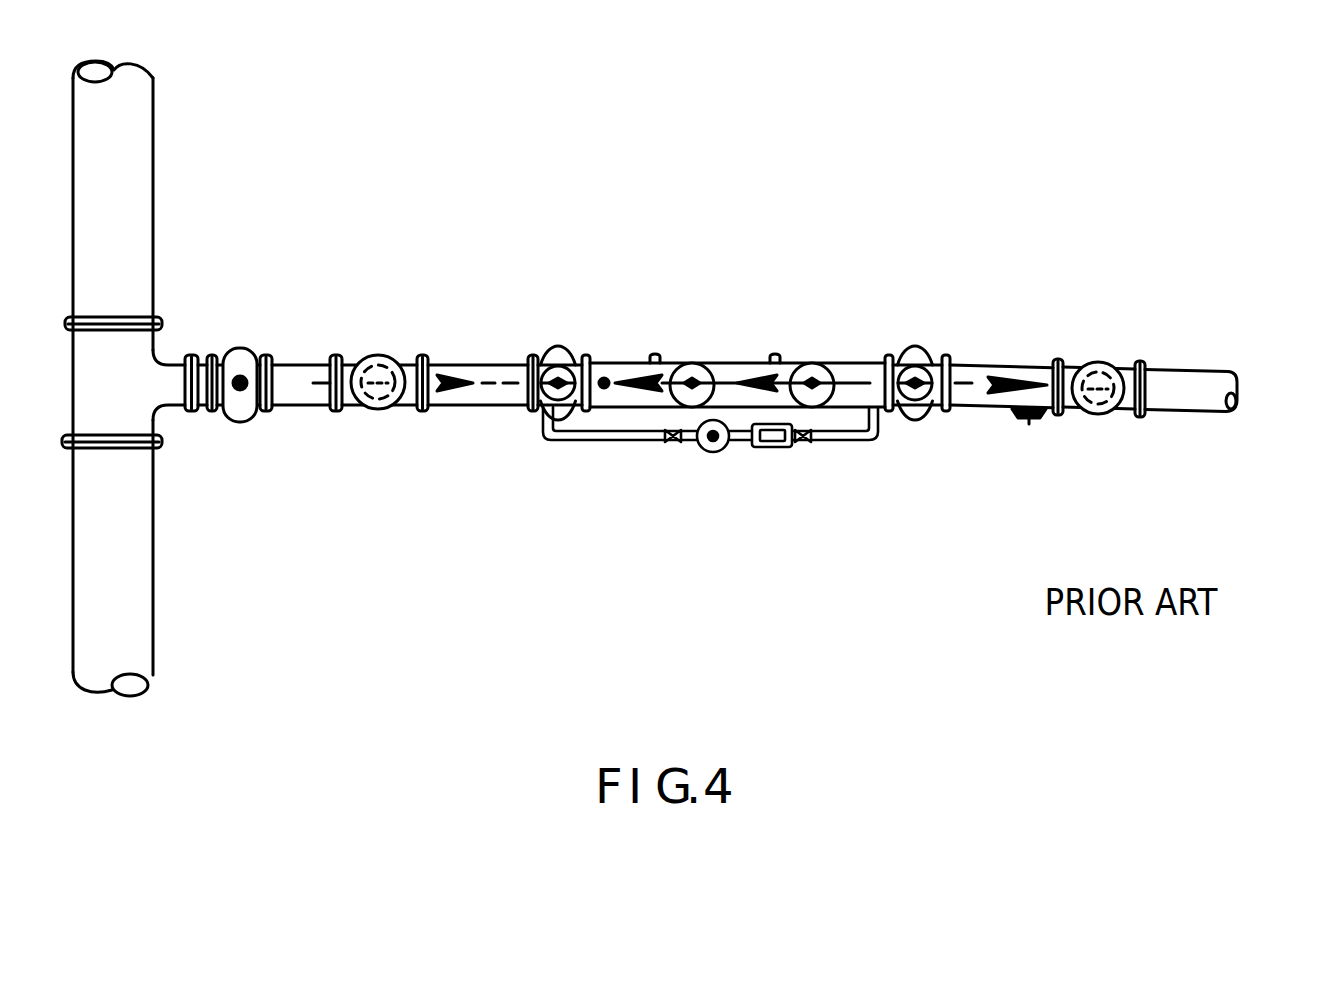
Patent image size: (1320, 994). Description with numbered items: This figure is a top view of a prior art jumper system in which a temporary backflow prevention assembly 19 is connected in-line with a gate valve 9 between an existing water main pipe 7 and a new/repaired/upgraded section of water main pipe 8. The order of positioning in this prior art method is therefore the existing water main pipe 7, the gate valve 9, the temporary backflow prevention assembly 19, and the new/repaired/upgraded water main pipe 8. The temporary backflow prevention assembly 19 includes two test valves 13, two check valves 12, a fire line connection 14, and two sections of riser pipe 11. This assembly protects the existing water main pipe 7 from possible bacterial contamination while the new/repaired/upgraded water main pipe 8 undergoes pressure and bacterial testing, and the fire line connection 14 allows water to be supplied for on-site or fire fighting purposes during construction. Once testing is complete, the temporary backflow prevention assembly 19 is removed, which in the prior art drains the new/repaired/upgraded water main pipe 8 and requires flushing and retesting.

The existing water main pipe 7 is at (153, 557).
The new/repaired/upgraded water main pipe 8 is at (1210, 395).
The gate valve 9 is at (243, 423).
The riser pipe 11 is at (373, 355).
The check valve 12 is at (703, 358).
The test valve 13 is at (549, 438).
The fire line connection 14 is at (1027, 430).
The temporary backflow prevention assembly 19 is at (1152, 139).